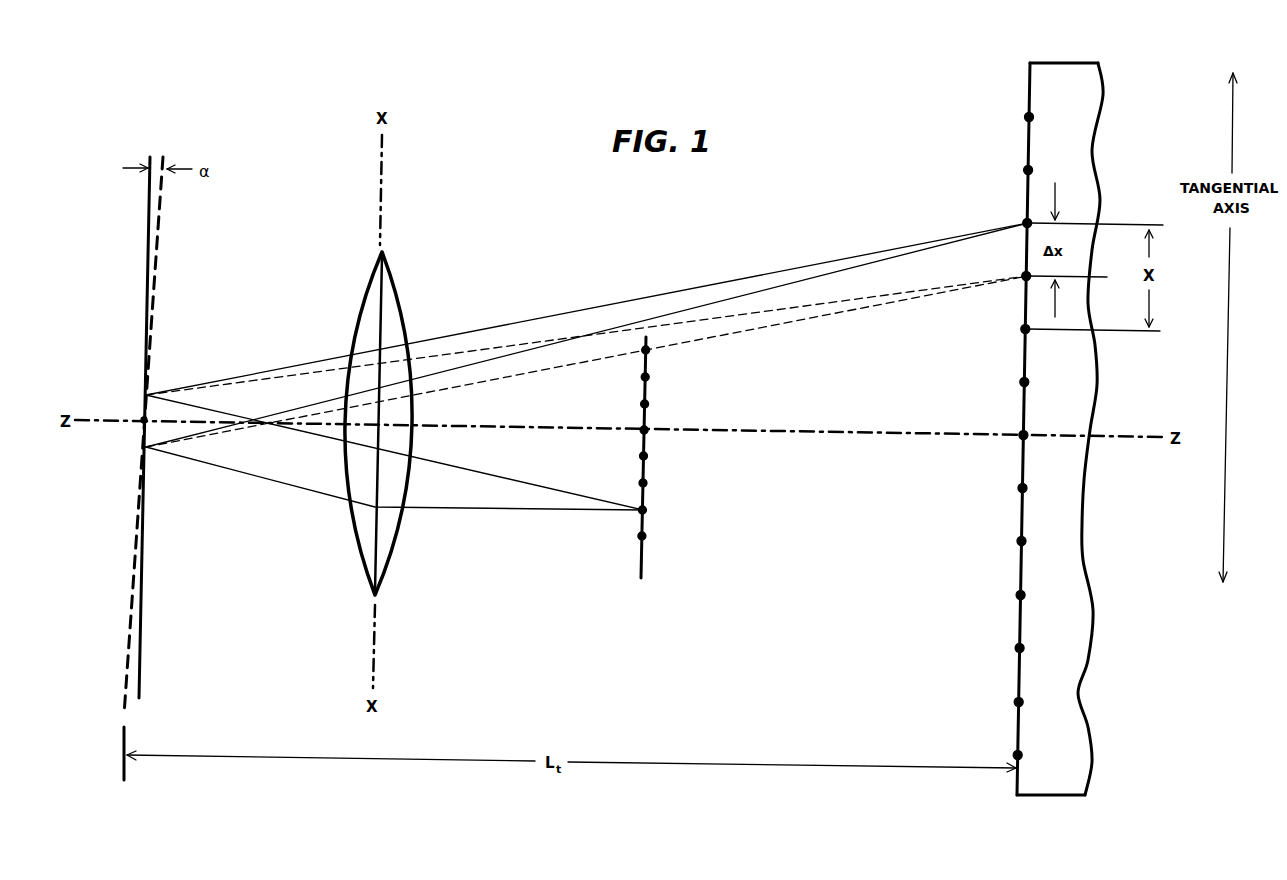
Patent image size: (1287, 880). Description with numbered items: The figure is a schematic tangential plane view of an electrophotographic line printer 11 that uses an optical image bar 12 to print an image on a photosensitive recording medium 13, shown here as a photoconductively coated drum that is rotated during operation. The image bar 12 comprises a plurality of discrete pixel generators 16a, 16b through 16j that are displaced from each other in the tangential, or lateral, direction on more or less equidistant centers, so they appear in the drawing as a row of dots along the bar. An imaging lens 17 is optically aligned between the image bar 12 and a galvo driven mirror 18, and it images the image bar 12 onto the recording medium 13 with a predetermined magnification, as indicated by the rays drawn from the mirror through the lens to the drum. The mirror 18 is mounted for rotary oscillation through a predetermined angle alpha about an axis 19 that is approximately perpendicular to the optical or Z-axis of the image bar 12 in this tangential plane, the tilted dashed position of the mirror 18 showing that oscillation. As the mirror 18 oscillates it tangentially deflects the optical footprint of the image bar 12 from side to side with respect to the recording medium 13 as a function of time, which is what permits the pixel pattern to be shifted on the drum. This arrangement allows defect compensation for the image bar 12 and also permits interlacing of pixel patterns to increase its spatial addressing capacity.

The electrophotographic line printer 11 is at (118, 633).
The optical image bar 12 is at (658, 618).
The photosensitive recording medium 13 is at (1043, 93).
The pixel generator 16a is at (649, 349).
The pixel generator 16b is at (647, 378).
The pixel generator 16j is at (644, 536).
The imaging lens 17 is at (402, 305).
The galvo driven mirror 18 is at (148, 247).
The axis 19 is at (142, 424).